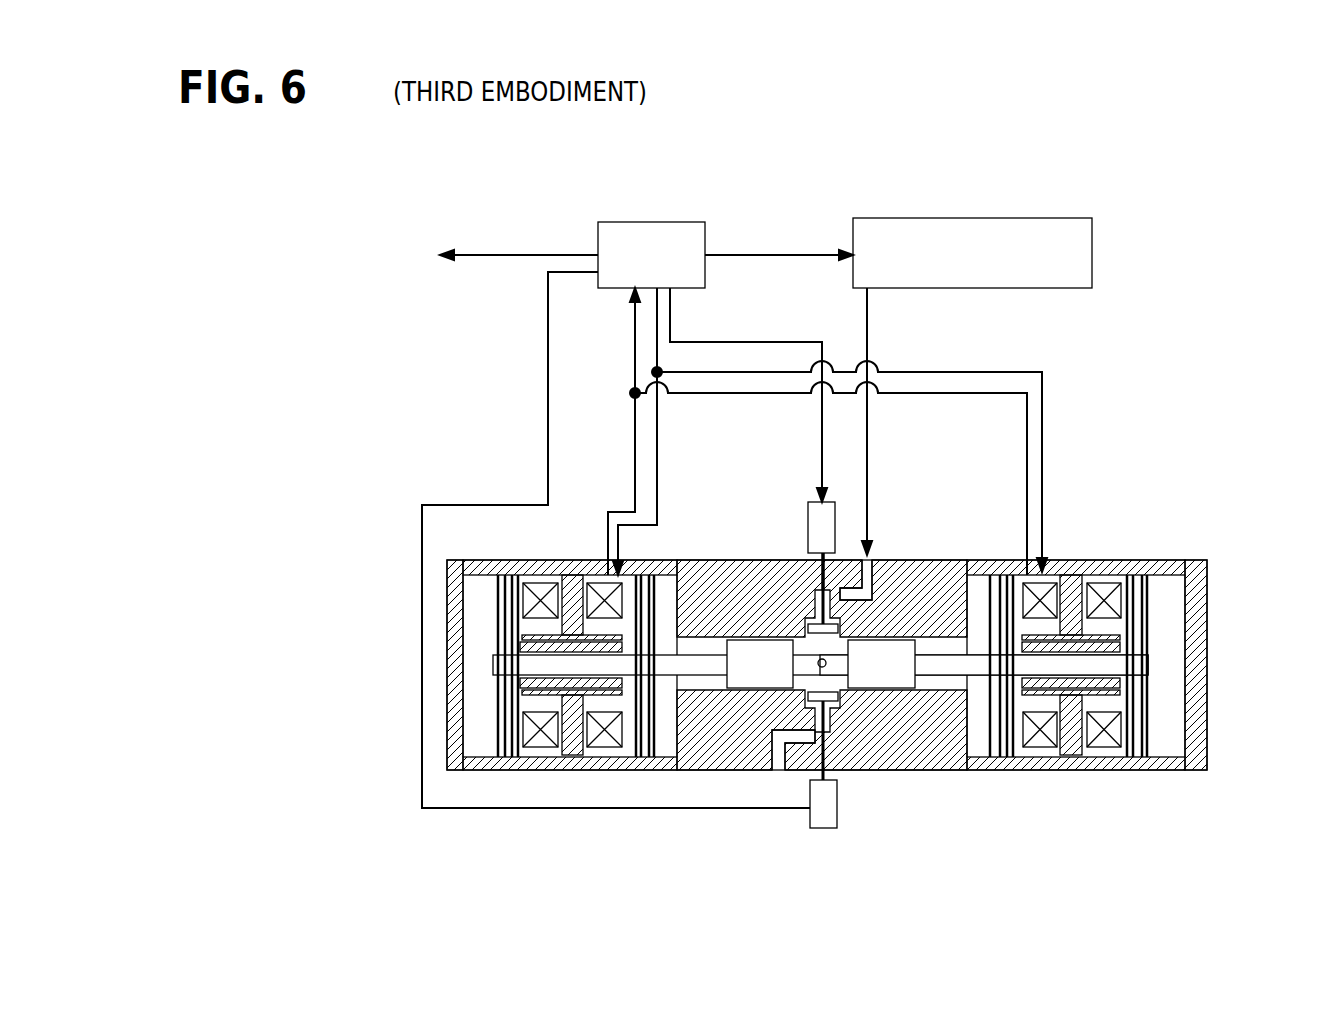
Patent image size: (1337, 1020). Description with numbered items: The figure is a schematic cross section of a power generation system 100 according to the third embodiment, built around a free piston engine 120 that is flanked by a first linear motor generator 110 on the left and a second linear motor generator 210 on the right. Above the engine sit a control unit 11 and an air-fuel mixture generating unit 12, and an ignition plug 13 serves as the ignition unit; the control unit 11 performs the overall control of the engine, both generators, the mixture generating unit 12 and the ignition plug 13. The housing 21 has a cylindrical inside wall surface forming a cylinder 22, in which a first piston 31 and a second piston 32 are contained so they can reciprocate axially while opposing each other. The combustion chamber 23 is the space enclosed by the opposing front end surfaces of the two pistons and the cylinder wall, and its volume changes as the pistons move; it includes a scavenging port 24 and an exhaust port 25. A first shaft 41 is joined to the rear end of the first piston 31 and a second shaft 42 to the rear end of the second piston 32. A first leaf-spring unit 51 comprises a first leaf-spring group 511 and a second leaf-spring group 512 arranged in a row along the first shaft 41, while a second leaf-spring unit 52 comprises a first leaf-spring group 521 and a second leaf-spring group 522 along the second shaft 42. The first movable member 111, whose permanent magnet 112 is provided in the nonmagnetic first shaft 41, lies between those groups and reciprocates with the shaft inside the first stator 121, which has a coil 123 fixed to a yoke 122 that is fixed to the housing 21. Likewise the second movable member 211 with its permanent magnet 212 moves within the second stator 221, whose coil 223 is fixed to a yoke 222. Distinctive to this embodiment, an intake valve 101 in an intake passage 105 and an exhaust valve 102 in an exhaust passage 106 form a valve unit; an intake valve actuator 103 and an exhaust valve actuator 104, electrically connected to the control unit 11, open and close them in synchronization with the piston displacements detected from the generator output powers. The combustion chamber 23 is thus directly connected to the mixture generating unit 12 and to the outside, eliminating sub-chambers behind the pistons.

The control unit 11 is at (624, 222).
The air-fuel mixture generating unit 12 is at (970, 218).
The ignition plug 13 is at (838, 552).
The housing 21 is at (470, 560).
The cylinder 22 is at (938, 757).
The combustion chamber 23 is at (803, 760).
The scavenging port 24 is at (870, 692).
The exhaust port 25 is at (808, 615).
The first piston 31 is at (745, 720).
The second piston 32 is at (932, 757).
The first shaft 41 is at (667, 757).
The second shaft 42 is at (978, 757).
The first leaf-spring unit 51 is at (487, 742).
The second leaf-spring unit 52 is at (1155, 739).
The power generation system 100 is at (1122, 361).
The intake valve 101 is at (815, 590).
The exhaust valve 102 is at (826, 740).
The intake valve actuator 103 is at (810, 510).
The exhaust valve actuator 104 is at (822, 830).
The intake passage 105 is at (877, 555).
The exhaust passage 106 is at (770, 762).
The first linear motor generator 110 is at (487, 602).
The first movable member 111 is at (497, 655).
The permanent magnet 112 is at (520, 640).
The free piston engine 120 is at (692, 778).
The first stator 121 is at (538, 627).
The yoke 122 is at (565, 560).
The coil 123 is at (500, 560).
The second linear motor generator 210 is at (1161, 592).
The second movable member 211 is at (1150, 678).
The permanent magnet 212 is at (1148, 635).
The second stator 221 is at (1104, 626).
The yoke 222 is at (1085, 575).
The coil 223 is at (1013, 580).
The first leaf-spring group 511 is at (472, 560).
The second leaf-spring group 512 is at (670, 560).
The first leaf-spring group 521 is at (1149, 580).
The second leaf-spring group 522 is at (975, 575).